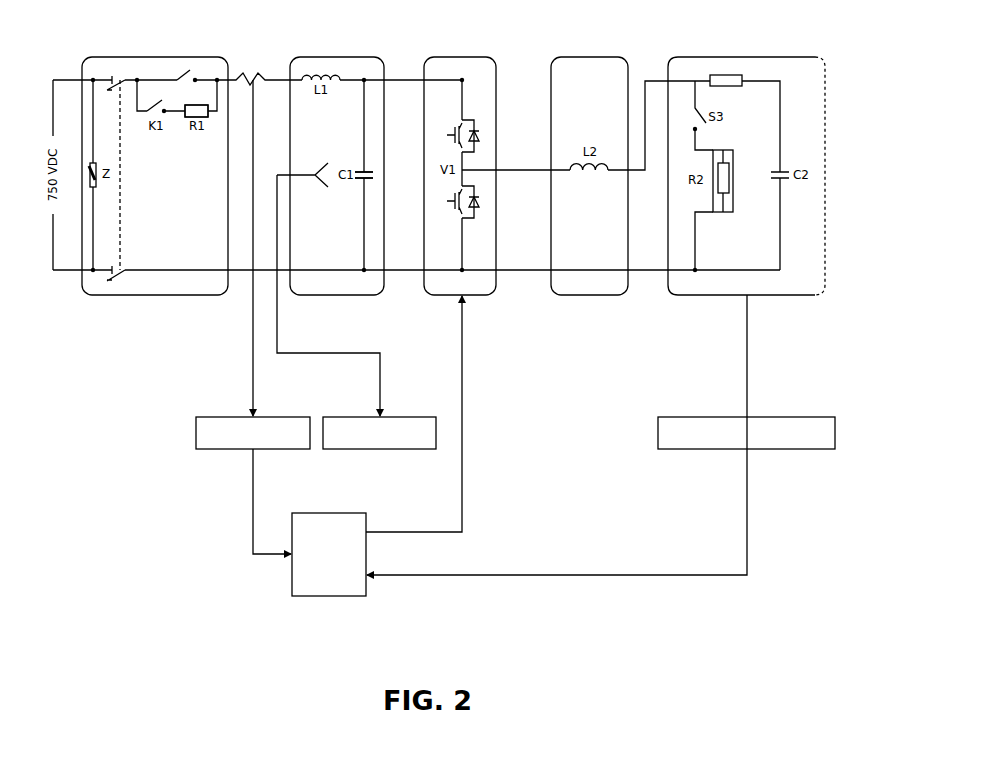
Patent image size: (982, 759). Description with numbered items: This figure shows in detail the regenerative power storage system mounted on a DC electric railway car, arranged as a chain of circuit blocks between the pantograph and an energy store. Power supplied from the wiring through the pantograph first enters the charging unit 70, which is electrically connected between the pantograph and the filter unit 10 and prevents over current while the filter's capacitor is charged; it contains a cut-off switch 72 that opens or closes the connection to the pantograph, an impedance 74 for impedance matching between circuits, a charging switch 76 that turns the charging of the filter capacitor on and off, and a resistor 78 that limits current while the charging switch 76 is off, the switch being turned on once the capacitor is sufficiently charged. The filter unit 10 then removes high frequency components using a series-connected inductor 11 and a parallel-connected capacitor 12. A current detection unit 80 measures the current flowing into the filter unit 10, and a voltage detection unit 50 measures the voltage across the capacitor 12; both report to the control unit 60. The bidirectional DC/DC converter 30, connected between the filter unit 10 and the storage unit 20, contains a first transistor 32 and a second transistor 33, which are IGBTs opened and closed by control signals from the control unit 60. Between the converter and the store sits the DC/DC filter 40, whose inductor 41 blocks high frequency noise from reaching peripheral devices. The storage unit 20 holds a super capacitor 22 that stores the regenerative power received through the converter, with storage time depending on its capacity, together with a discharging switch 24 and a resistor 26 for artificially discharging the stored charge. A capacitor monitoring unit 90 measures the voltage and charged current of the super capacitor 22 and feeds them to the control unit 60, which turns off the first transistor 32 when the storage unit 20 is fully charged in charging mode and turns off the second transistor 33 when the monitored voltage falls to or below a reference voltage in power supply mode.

The filter unit 10 is at (348, 57).
The inductor 11 is at (326, 78).
The capacitor 12 is at (378, 175).
The storage unit 20 is at (782, 57).
The super capacitor 22 is at (790, 172).
The discharging switch 24 is at (703, 118).
The resistor 26 is at (733, 184).
The bidirectional DC/DC converter 30 is at (470, 57).
The first transistor 32 is at (480, 134).
The second transistor 33 is at (480, 203).
The DC/DC filter 40 is at (595, 57).
The inductor 41 is at (570, 170).
The voltage detection unit 50 is at (410, 449).
The control unit 60 is at (330, 596).
The charging unit 70 is at (115, 57).
The cut-off switch 72 is at (118, 282).
The impedance 74 is at (90, 170).
The charging switch 76 is at (190, 70).
The resistor 78 is at (197, 105).
The current detection unit 80 is at (196, 430).
The capacitor monitoring unit 90 is at (658, 430).